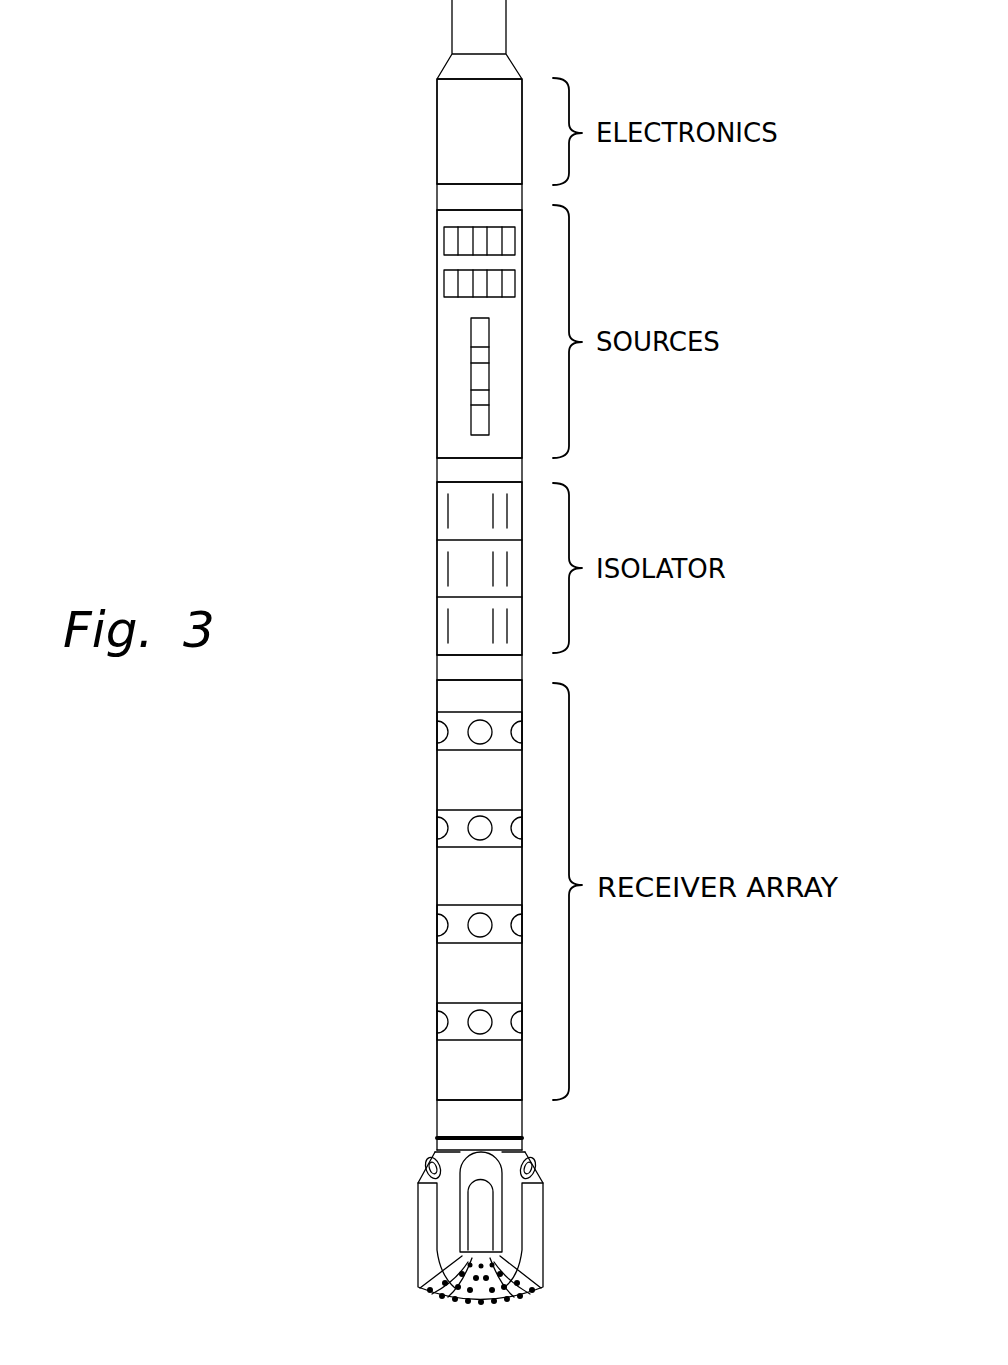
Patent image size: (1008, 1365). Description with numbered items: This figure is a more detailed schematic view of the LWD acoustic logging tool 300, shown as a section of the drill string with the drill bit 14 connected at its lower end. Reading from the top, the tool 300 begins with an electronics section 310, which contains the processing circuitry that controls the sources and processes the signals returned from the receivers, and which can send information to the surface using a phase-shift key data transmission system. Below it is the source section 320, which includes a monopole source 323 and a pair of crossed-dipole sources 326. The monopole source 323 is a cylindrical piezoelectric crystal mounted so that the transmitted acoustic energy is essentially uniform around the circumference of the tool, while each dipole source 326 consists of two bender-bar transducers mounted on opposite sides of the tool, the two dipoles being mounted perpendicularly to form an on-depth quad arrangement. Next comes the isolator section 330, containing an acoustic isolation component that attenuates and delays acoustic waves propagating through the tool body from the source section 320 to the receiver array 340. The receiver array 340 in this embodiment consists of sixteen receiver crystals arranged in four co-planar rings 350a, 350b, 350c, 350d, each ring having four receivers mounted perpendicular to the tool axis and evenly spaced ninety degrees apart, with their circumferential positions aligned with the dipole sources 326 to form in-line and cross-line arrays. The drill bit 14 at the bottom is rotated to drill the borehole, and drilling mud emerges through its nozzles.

The LWD acoustic logging tool 300 is at (274, 40).
The electronics section 310 is at (465, 146).
The source section 320 is at (437, 370).
The monopole source 323 is at (453, 279).
The crossed-dipole sources 326 is at (463, 330).
The isolator section 330 is at (463, 572).
The receiver array 340 is at (743, 877).
The co-planar receiver ring 350a is at (463, 733).
The co-planar receiver ring 350b is at (463, 830).
The co-planar receiver ring 350c is at (463, 923).
The co-planar receiver ring 350d is at (463, 1022).
The drill bit 14 is at (445, 1218).